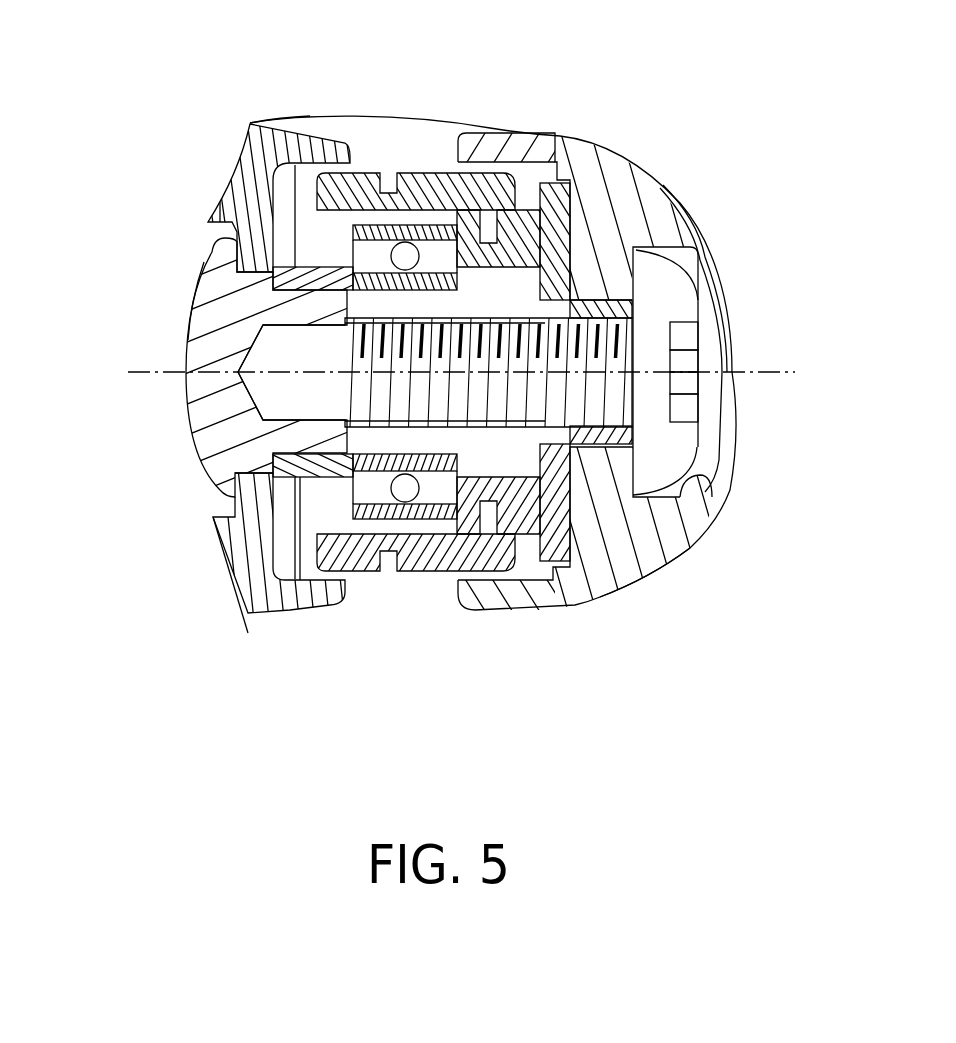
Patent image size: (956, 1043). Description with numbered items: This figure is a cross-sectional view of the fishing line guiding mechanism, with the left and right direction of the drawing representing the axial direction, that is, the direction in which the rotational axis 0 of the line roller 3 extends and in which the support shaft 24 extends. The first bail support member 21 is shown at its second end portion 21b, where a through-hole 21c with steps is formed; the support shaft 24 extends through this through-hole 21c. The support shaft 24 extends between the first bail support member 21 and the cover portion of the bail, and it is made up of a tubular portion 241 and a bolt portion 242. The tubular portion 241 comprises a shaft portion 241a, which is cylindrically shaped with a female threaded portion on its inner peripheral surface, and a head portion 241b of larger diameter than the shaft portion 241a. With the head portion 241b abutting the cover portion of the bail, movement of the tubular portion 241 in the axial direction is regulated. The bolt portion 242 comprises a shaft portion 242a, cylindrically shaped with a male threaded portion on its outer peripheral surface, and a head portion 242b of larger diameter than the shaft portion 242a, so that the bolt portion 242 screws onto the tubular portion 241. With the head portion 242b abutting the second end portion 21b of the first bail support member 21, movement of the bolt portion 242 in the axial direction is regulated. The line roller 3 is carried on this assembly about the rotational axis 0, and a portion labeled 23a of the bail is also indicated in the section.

The rotational axis 0 is at (461, 370).
The line roller 3 is at (400, 150).
The housing end portion 23a is at (277, 128).
The first bail support member 21 is at (598, 602).
The second end portion 21b is at (663, 553).
The through-hole 21c is at (693, 478).
The support shaft 24 is at (190, 322).
The tubular portion 241 is at (210, 249).
The shaft portion 241a is at (318, 440).
The head portion 241b is at (197, 290).
The bolt portion 242 is at (700, 330).
The shaft portion 242a is at (597, 318).
The head portion 242b is at (680, 298).